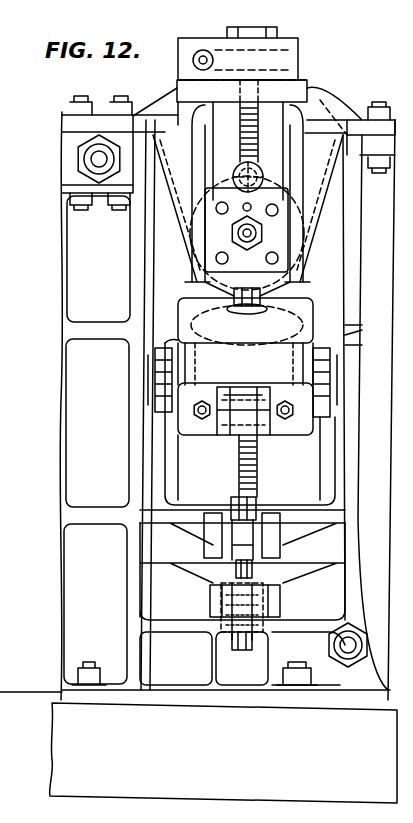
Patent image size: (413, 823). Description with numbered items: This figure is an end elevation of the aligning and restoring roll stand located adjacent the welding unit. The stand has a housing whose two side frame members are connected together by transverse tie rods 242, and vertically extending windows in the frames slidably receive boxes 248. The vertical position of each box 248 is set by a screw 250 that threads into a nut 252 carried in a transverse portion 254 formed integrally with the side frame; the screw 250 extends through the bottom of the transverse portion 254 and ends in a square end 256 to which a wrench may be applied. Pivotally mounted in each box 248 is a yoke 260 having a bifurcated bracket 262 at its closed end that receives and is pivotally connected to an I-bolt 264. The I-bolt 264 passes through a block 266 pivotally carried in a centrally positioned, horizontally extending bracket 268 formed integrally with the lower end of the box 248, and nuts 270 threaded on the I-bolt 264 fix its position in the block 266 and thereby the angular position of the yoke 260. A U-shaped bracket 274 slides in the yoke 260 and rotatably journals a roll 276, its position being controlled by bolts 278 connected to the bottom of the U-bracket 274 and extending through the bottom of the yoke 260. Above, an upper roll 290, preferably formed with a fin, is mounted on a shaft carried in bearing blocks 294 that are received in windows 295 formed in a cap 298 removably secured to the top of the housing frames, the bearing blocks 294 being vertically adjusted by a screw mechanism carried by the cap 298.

The transverse tie rod 242 is at (78, 152).
The box 248 is at (156, 470).
The screw 250 is at (282, 590).
The nut 252 is at (282, 604).
The transverse portion 254 is at (210, 604).
The square end 256 is at (246, 650).
The yoke 260 is at (150, 346).
The bifurcated bracket 262 is at (193, 389).
The I-bolt 264 is at (222, 425).
The block 266 is at (160, 527).
The bracket 268 is at (212, 516).
The nut 270 is at (232, 500).
The U-shaped bracket 274 is at (185, 318).
The roll 276 is at (200, 300).
The bolt 278 is at (196, 404).
The upper roll 290 is at (190, 262).
The bearing block 294 is at (240, 228).
The window 295 is at (195, 278).
The cap 298 is at (120, 117).